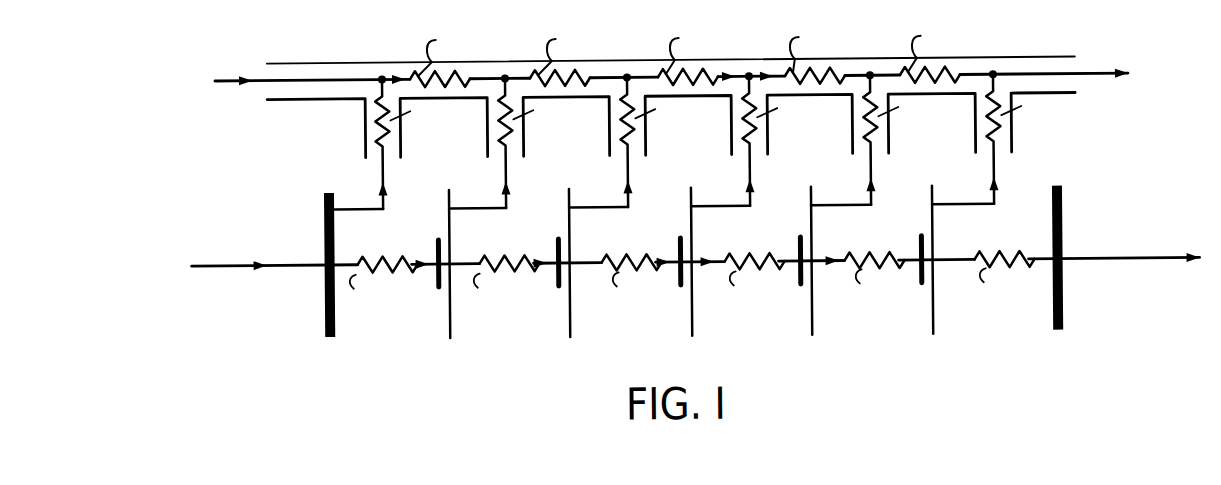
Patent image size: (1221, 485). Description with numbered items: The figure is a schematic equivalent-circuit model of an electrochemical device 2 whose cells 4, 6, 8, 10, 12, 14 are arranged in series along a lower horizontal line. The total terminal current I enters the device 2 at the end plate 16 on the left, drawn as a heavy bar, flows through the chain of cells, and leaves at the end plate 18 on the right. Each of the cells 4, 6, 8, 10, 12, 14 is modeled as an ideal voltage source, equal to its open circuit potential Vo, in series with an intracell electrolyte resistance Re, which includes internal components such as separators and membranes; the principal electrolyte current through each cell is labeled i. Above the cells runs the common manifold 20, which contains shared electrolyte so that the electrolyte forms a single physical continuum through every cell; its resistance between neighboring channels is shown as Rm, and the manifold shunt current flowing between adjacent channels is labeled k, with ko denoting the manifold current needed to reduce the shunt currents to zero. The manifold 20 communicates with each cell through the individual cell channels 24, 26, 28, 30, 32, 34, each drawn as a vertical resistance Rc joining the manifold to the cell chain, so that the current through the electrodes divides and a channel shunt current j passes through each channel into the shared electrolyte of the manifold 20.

The electrochemical device 2 is at (212, 161).
The cell 4 is at (394, 344).
The cell 6 is at (527, 338).
The cell 8 is at (652, 336).
The cell 10 is at (778, 335).
The cell 12 is at (900, 328).
The cell 14 is at (1030, 323).
The end plate 16 is at (322, 301).
The end plate 18 is at (1063, 324).
The common manifold 20 is at (733, 64).
The cell channel 24 is at (365, 129).
The cell channel 26 is at (487, 137).
The cell channel 28 is at (609, 137).
The cell channel 30 is at (731, 137).
The cell channel 32 is at (852, 137).
The cell channel 34 is at (975, 136).